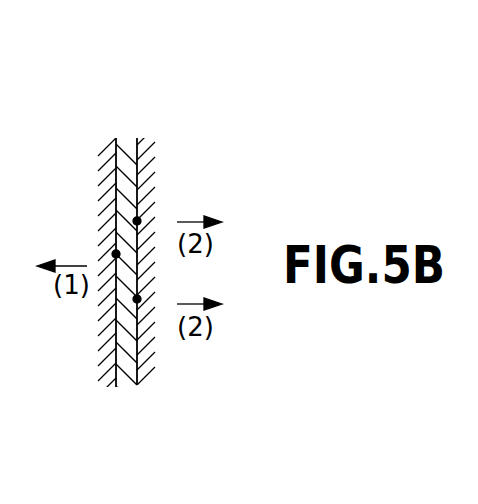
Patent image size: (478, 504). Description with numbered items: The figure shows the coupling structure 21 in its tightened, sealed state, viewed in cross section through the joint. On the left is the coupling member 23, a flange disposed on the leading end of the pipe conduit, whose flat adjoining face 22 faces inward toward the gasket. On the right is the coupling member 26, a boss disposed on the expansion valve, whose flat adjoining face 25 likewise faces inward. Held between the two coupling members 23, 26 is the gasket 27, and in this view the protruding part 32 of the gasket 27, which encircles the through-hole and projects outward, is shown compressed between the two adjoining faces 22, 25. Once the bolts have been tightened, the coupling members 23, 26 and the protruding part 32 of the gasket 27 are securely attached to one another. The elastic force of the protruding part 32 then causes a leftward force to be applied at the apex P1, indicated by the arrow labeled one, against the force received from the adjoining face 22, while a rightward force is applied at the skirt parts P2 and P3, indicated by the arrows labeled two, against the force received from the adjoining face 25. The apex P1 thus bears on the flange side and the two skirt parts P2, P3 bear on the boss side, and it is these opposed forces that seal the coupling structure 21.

The coupling structure 21 is at (107, 410).
The adjoining face 22 is at (120, 334).
The coupling member 23 is at (95, 138).
The adjoining face 25 is at (136, 370).
The coupling member 26 is at (159, 138).
The gasket 27 is at (120, 132).
The protruding part 32 is at (112, 284).
The apex of the protruding part P1 is at (116, 254).
The skirt part of the protruding part P2 is at (137, 222).
The skirt part of the protruding part P3 is at (137, 299).